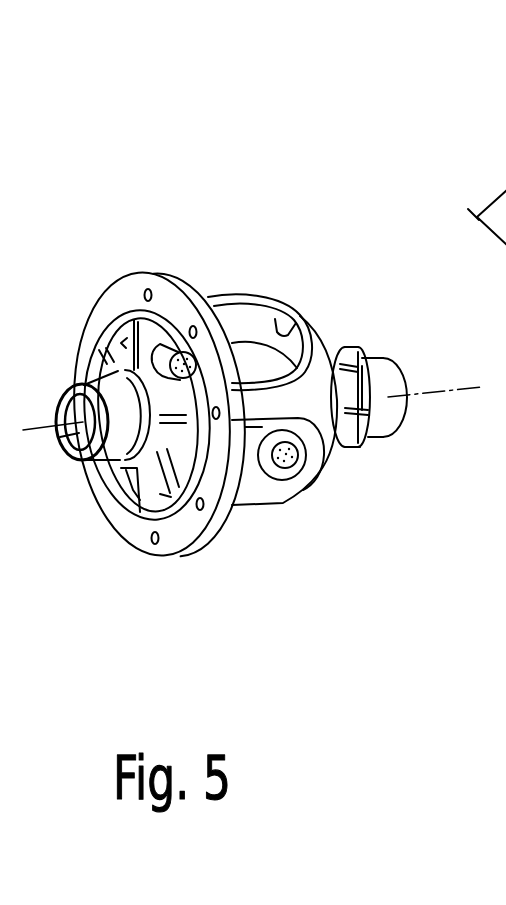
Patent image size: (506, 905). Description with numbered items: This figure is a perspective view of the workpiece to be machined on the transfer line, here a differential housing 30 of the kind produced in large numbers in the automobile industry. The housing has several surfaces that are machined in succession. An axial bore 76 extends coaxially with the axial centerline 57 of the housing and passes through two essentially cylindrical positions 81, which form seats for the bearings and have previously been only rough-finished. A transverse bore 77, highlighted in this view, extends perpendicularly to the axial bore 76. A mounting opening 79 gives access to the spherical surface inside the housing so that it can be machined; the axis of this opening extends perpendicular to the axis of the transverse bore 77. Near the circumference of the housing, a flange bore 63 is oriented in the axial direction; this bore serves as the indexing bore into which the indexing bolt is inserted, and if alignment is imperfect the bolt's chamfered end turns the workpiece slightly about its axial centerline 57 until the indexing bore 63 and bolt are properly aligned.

The differential housing 30 is at (262, 204).
The flange bore 63 is at (146, 292).
The axial bore 76 is at (60, 440).
The transverse bore 77 is at (258, 458).
The mounting opening 79 is at (293, 332).
The cylindrical positions 81 is at (73, 390).
The axial centerline 57 is at (457, 389).